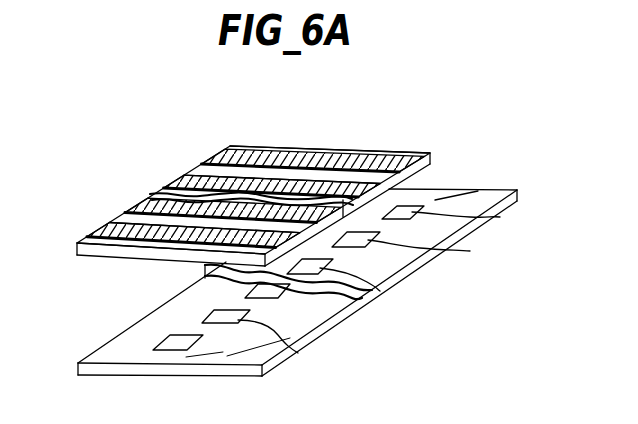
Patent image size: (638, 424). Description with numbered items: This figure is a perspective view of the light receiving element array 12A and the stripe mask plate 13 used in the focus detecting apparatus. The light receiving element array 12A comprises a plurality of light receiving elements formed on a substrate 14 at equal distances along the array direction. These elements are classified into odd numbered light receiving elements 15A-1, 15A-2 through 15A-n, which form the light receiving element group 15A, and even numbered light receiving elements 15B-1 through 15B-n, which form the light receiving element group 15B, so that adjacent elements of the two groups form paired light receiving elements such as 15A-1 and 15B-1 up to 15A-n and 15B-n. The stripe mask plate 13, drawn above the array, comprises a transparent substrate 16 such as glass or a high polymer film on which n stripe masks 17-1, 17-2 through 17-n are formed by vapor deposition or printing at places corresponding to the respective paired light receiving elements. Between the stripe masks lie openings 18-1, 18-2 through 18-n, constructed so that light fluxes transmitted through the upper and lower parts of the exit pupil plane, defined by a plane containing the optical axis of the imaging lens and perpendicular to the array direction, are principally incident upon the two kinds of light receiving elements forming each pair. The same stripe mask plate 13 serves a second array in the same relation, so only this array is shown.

The light receiving element array 12A is at (550, 164).
The stripe mask plate 13 is at (441, 150).
The substrate 14 is at (418, 263).
The light receiving element group 15A is at (152, 355).
The odd numbered light receiving element 15A-1 is at (183, 342).
The odd numbered light receiving element 15A-2 is at (278, 292).
The odd numbered light receiving element 15A-n is at (470, 251).
The light receiving element group 15B is at (238, 329).
The even numbered light receiving element 15B-1 is at (298, 353).
The even numbered light receiving element 15B-n is at (500, 217).
The transparent substrate 16 is at (95, 253).
The stripe mask 17-1 is at (134, 232).
The stripe mask 17-2 is at (156, 199).
The stripe mask 17-n is at (234, 150).
The opening 18-1 is at (155, 246).
The opening 18-2 is at (136, 222).
The opening 18-n is at (270, 177).